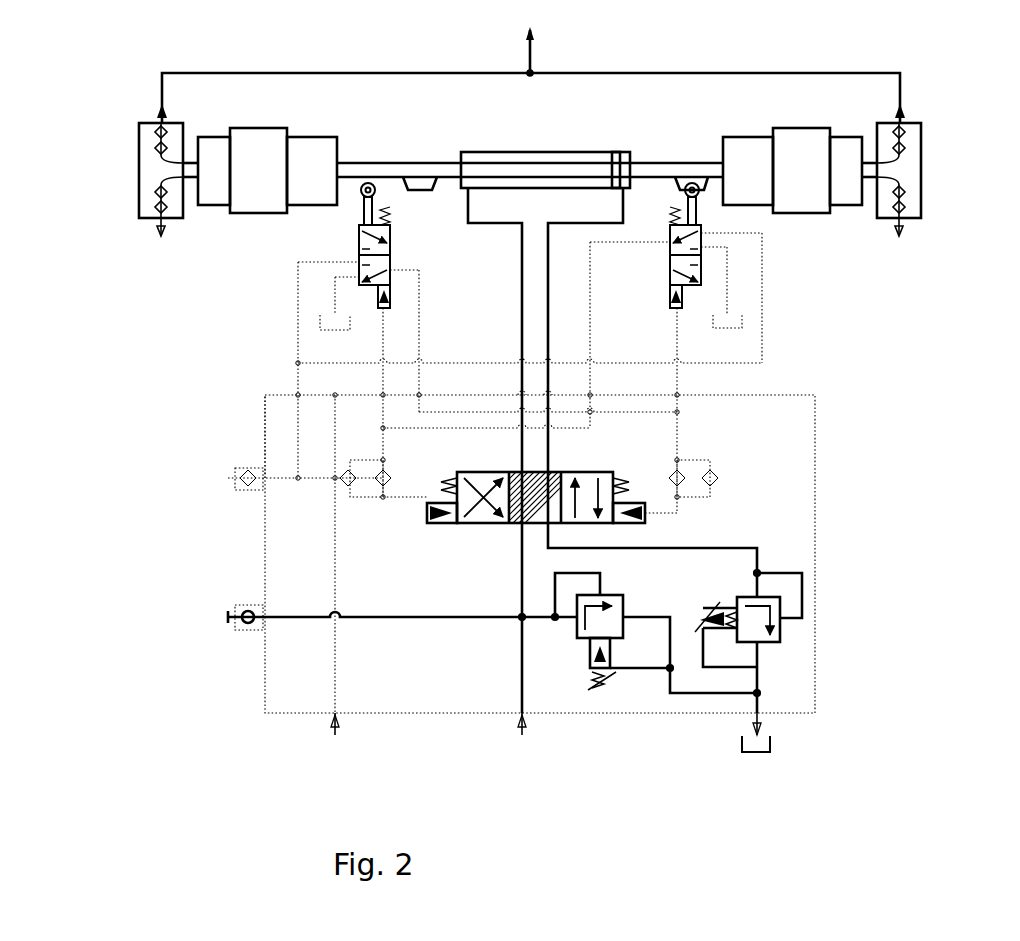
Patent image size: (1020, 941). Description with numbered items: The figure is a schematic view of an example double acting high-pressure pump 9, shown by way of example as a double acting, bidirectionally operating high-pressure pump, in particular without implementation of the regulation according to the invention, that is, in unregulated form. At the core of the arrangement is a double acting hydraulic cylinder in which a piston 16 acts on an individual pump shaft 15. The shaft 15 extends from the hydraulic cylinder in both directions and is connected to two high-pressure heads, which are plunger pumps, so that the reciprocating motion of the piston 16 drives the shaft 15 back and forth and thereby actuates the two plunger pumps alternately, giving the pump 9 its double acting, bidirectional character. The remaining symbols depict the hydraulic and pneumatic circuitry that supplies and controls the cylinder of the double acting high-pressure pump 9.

The double acting high-pressure pump 9 is at (70, 86).
The individual pump shaft 15 is at (450, 164).
The piston 16 is at (612, 153).